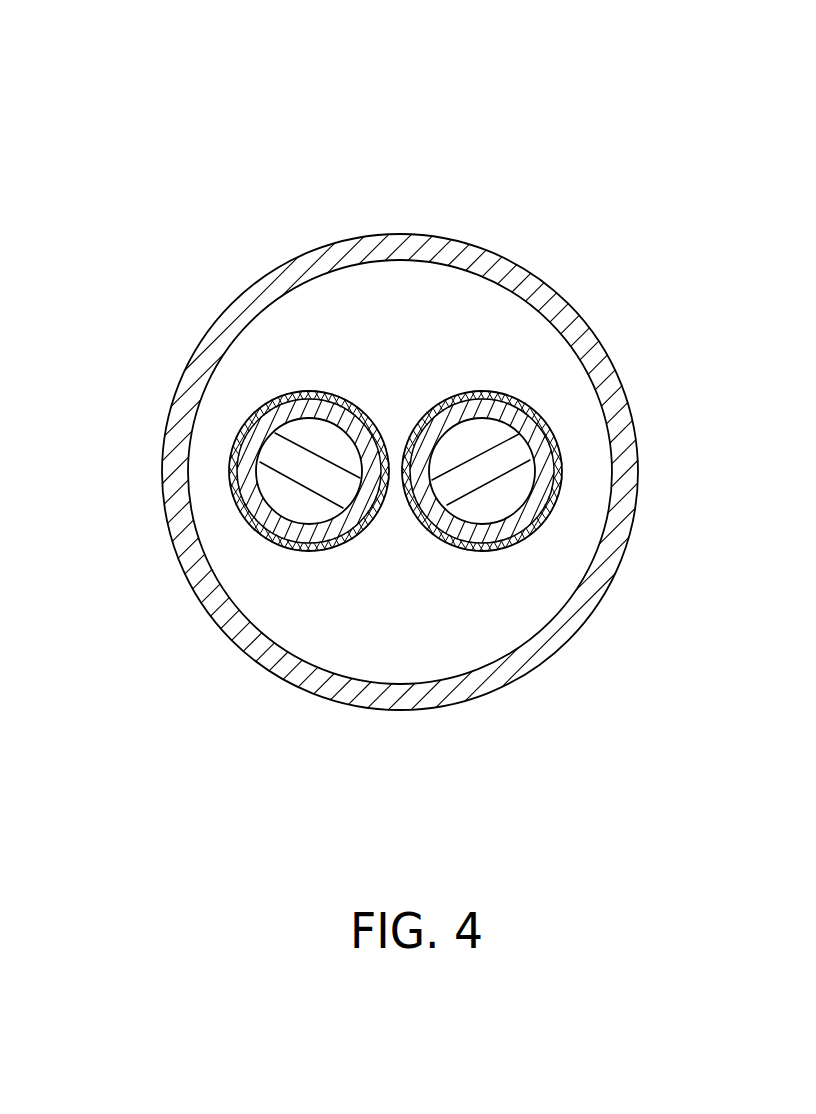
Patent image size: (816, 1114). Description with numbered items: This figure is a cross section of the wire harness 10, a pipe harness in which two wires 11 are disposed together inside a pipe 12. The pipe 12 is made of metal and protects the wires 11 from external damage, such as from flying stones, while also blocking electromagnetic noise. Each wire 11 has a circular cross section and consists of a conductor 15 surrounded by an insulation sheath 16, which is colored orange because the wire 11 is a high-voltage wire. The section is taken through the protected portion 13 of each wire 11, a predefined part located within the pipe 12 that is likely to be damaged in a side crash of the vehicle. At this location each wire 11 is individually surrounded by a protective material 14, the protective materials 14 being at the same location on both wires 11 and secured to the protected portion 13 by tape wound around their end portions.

The wire harness 10 is at (335, 108).
The wire 11 is at (327, 433).
The pipe 12 is at (560, 300).
The protected portion 13 is at (562, 398).
The protective material 14 is at (237, 485).
The conductor 15 is at (298, 497).
The insulation sheath 16 is at (330, 532).